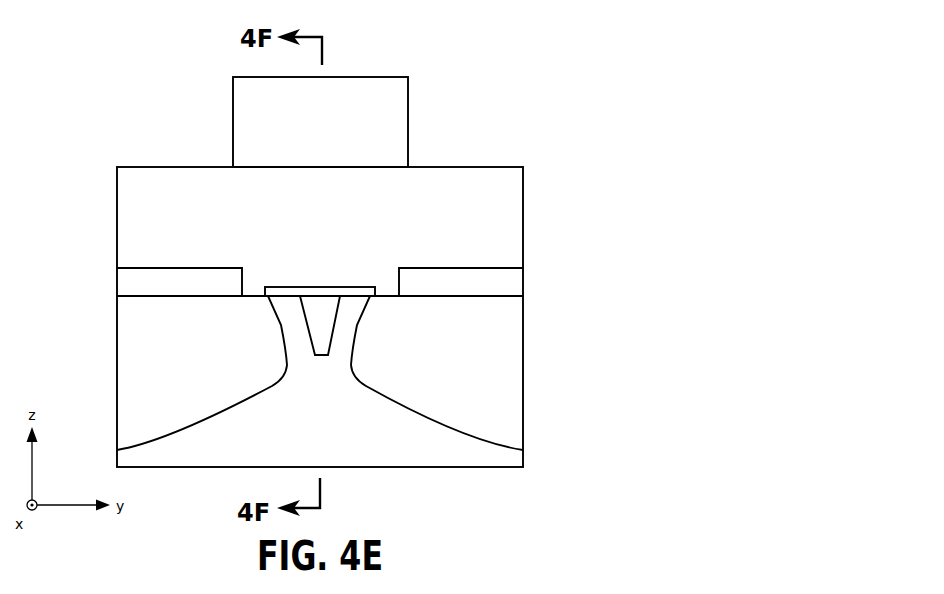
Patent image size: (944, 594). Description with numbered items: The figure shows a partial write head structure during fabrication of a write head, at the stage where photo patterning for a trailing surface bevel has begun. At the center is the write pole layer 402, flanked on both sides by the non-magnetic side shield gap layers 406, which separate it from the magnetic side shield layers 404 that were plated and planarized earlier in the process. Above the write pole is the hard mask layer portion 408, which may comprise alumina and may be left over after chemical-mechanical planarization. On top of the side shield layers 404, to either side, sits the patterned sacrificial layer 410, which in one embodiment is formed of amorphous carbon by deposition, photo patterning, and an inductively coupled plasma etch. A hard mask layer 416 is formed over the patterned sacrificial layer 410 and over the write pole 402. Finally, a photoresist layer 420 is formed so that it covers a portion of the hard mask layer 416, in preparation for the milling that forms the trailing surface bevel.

The write pole layer 402 is at (318, 341).
The magnetic side shield layers 404 is at (143, 327).
The non-magnetic side shield gap layers 406 is at (293, 324).
The hard mask layer portion 408 is at (363, 290).
The patterned sacrificial layer 410 is at (140, 283).
The hard mask layer 416 is at (503, 215).
The photoresist layer 420 is at (387, 128).